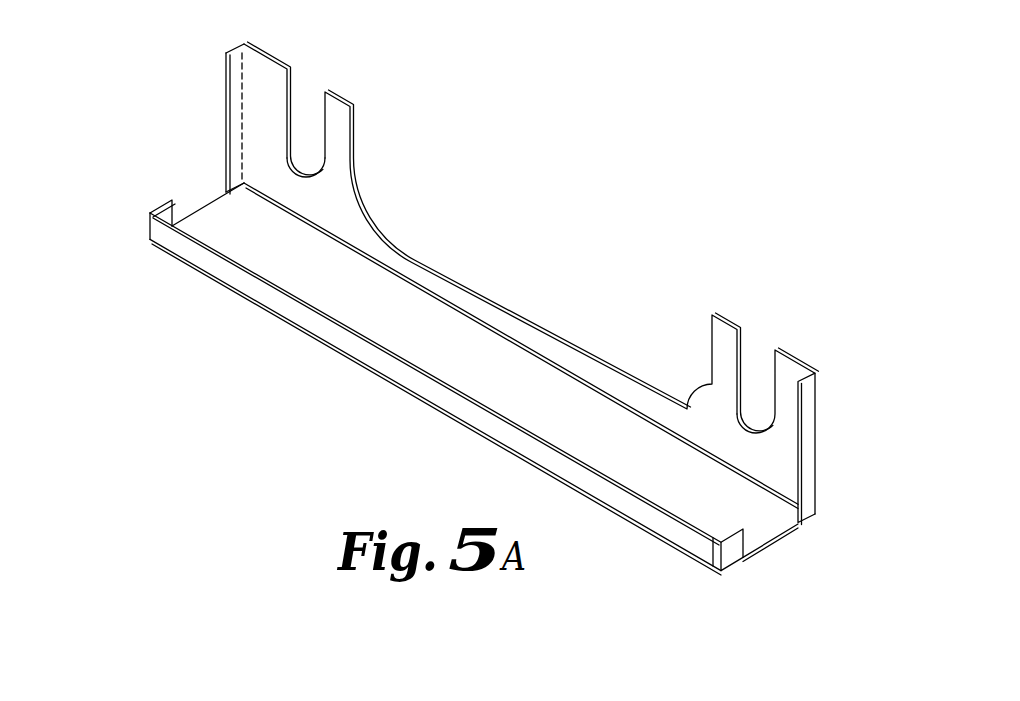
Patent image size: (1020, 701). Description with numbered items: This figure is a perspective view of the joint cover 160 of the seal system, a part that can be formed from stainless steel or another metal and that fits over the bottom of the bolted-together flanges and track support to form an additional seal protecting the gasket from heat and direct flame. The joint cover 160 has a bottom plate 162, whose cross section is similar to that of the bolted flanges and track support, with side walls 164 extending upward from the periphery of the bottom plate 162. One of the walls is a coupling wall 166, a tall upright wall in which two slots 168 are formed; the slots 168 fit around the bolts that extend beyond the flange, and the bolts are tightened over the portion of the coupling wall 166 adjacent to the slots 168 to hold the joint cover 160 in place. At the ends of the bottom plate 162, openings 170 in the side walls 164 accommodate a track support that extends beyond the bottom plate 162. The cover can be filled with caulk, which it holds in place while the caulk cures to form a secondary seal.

The joint cover 160 is at (86, 101).
The bottom plate 162 is at (216, 227).
The side walls 164 is at (262, 293).
The coupling wall 166 is at (336, 191).
The slots 168 is at (305, 84).
The openings 170 is at (795, 540).